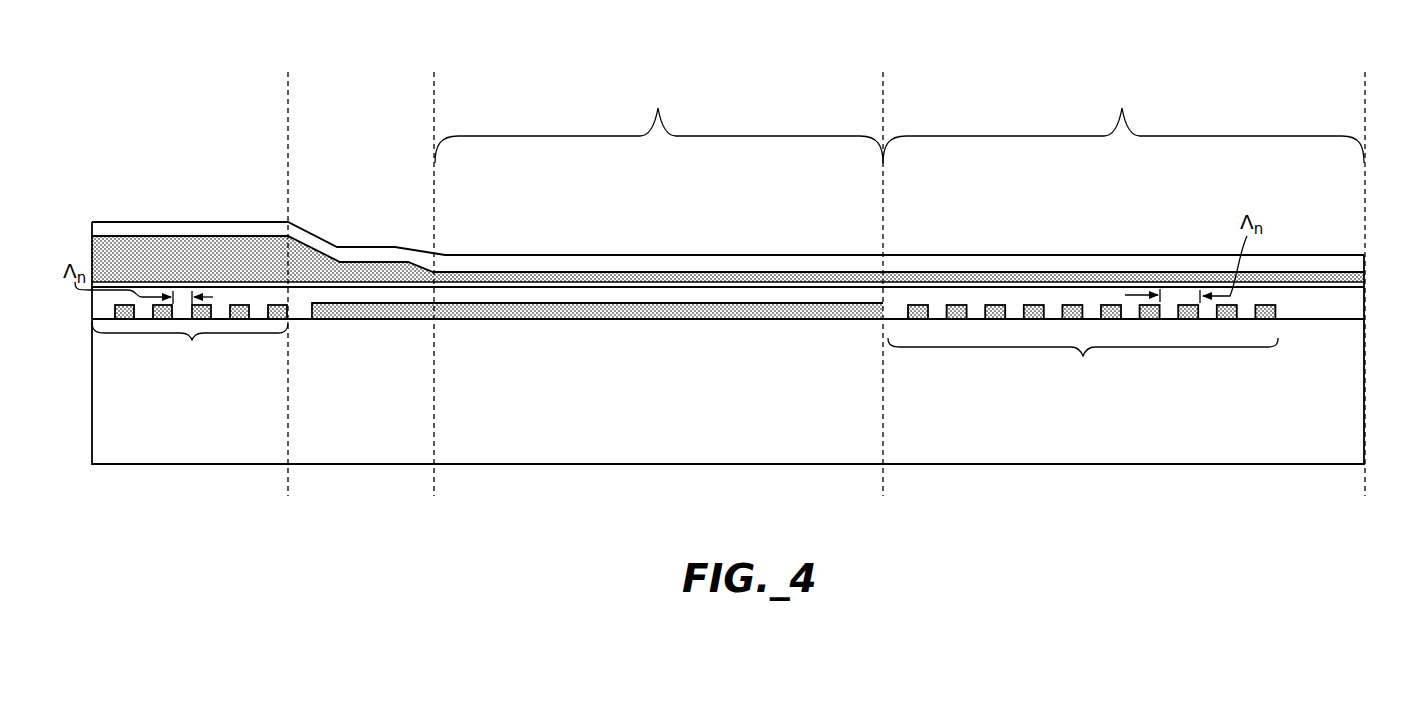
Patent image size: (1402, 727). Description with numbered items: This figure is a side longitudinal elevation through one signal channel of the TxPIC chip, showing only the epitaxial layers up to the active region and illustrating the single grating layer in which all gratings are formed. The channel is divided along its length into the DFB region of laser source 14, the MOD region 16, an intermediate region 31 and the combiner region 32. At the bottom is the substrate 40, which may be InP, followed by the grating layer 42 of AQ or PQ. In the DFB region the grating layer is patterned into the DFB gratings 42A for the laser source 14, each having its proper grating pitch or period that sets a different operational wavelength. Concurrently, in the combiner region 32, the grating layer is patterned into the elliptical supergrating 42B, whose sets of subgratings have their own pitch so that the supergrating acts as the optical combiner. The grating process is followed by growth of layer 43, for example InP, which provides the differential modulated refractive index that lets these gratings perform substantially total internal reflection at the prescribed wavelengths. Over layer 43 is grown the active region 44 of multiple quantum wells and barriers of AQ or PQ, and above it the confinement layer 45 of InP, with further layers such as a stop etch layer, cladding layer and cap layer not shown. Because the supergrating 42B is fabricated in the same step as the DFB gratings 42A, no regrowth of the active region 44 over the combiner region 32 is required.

The laser source 14 is at (209, 284).
The MOD region 16 is at (371, 284).
The region 31 is at (659, 284).
The combiner region 32 is at (1124, 284).
The substrate 40 is at (1352, 382).
The grating layer 42 is at (718, 318).
The DFB gratings 42A is at (190, 358).
The supergrating 42B is at (1083, 369).
The layer 43 is at (1357, 296).
The active region 44 is at (1360, 278).
The confinement layer 45 is at (1342, 262).